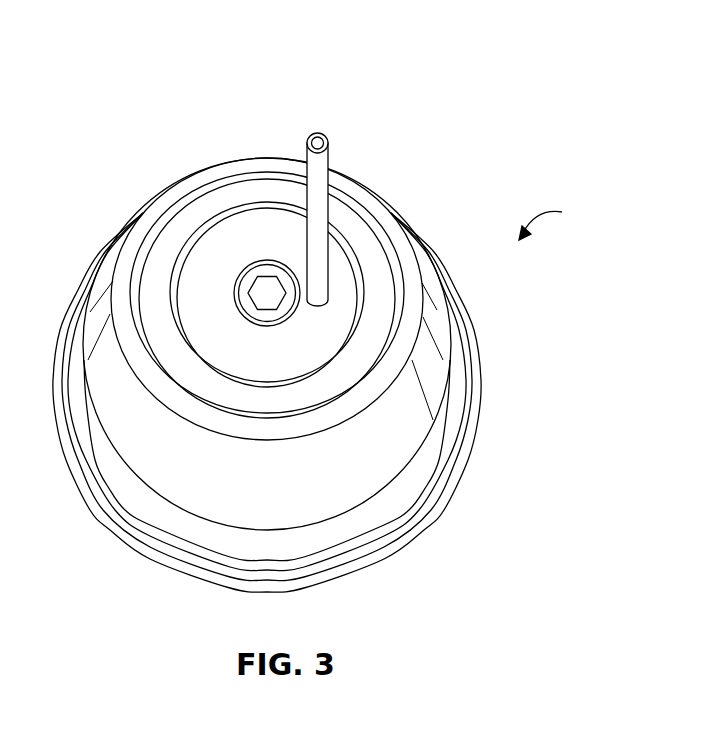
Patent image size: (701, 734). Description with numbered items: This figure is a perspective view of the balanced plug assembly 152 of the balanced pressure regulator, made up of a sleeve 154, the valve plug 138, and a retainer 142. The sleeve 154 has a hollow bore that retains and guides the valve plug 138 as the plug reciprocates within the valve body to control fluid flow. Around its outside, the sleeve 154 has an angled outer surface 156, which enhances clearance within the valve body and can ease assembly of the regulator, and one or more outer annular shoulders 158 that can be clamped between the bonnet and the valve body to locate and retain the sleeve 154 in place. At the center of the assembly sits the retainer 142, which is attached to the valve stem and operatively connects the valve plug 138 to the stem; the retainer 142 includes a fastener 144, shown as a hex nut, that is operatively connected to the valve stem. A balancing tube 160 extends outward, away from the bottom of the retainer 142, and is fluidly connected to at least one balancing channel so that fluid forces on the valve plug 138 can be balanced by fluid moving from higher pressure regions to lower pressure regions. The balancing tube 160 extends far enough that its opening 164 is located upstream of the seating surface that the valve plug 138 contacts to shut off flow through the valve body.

The valve plug 138 is at (370, 331).
The retainer 142 is at (204, 254).
The fastener 144 is at (265, 275).
The balanced plug assembly 152 is at (561, 219).
The sleeve 154 is at (140, 432).
The angled outer surface 156 is at (403, 417).
The outer annular shoulder 158 is at (405, 492).
The balancing tube 160 is at (330, 159).
The opening 164 is at (320, 139).